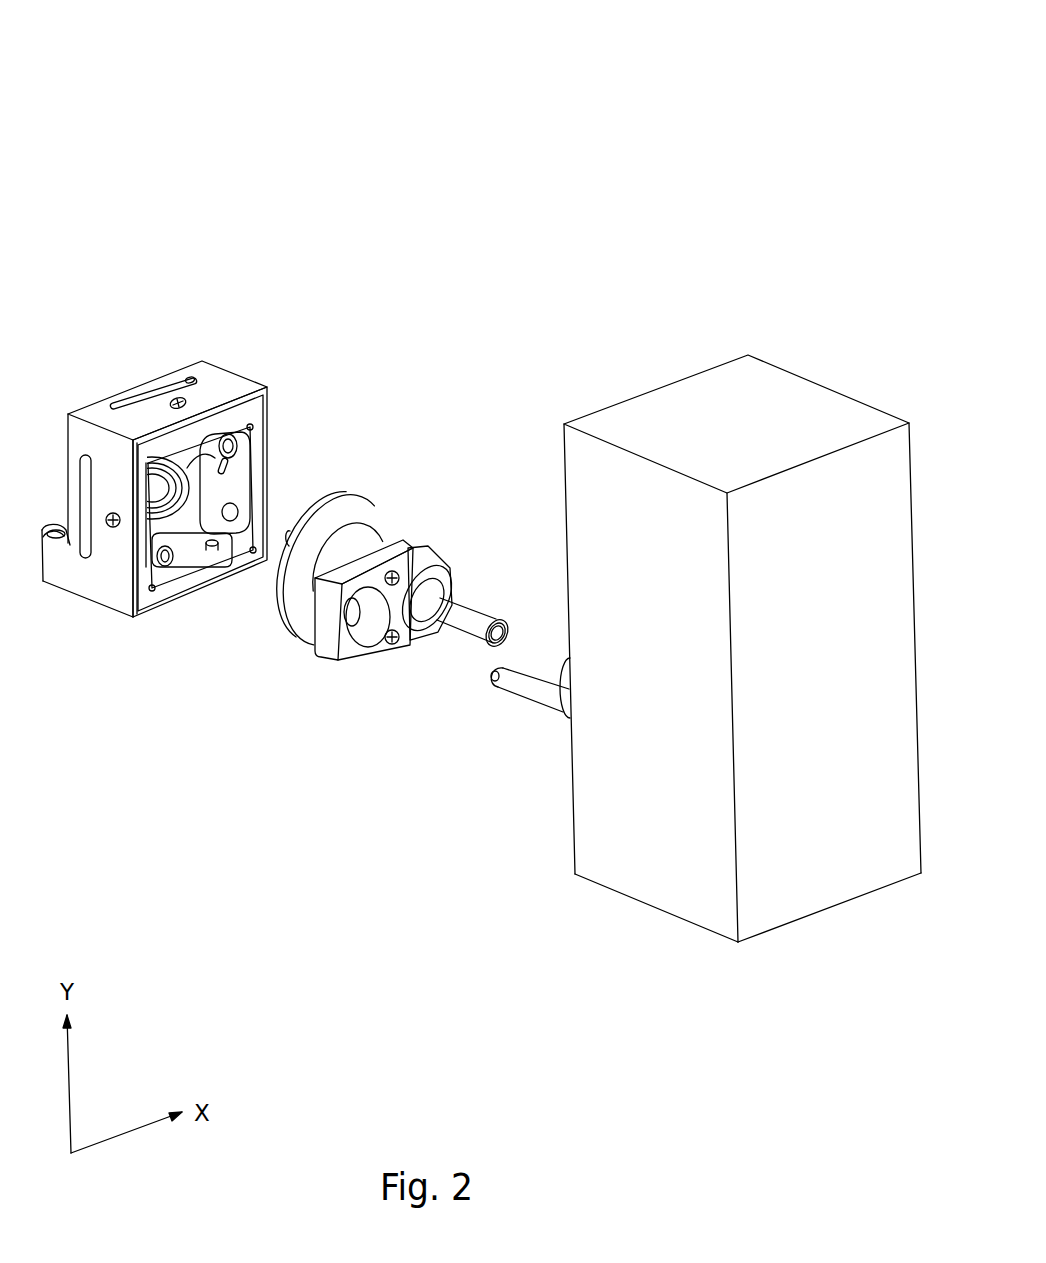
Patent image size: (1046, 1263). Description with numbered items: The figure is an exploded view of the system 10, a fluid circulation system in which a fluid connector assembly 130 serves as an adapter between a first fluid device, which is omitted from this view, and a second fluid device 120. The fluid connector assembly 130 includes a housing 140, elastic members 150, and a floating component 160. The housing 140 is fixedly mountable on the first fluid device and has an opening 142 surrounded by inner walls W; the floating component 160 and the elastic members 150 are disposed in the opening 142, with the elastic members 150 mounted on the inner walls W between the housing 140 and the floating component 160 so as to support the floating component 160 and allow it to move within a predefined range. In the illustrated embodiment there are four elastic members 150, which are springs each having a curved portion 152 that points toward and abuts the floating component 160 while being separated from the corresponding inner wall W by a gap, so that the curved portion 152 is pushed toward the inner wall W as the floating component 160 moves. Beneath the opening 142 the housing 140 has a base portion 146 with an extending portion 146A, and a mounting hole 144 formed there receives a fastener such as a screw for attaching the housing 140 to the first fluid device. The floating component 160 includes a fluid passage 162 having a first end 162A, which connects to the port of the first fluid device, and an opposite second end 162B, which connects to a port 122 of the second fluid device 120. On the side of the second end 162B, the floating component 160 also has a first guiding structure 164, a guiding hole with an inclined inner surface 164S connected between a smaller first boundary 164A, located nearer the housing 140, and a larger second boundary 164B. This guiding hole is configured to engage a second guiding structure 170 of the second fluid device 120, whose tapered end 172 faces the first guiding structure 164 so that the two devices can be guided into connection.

The system 10 is at (132, 37).
The second fluid device 120 is at (651, 900).
The port 122 is at (568, 703).
The fluid connector assembly 130 is at (340, 290).
The housing 140 is at (72, 430).
The opening 142 is at (228, 430).
The mounting hole 144 is at (62, 532).
The base portion 146 is at (120, 605).
The extending portion 146A is at (37, 566).
The elastic member 150 is at (160, 460).
The curved portion 152 is at (232, 488).
The inner wall W is at (200, 453).
The floating component 160 is at (283, 657).
The fluid passage 162 is at (373, 538).
The first end 162A is at (292, 538).
The second end 162B is at (478, 615).
The first guiding structure 164 is at (375, 657).
The first boundary 164A is at (358, 612).
The second boundary 164B is at (355, 648).
The inclined inner surface 164S is at (353, 637).
The second guiding structure 170 is at (545, 702).
The tapered end 172 is at (497, 672).